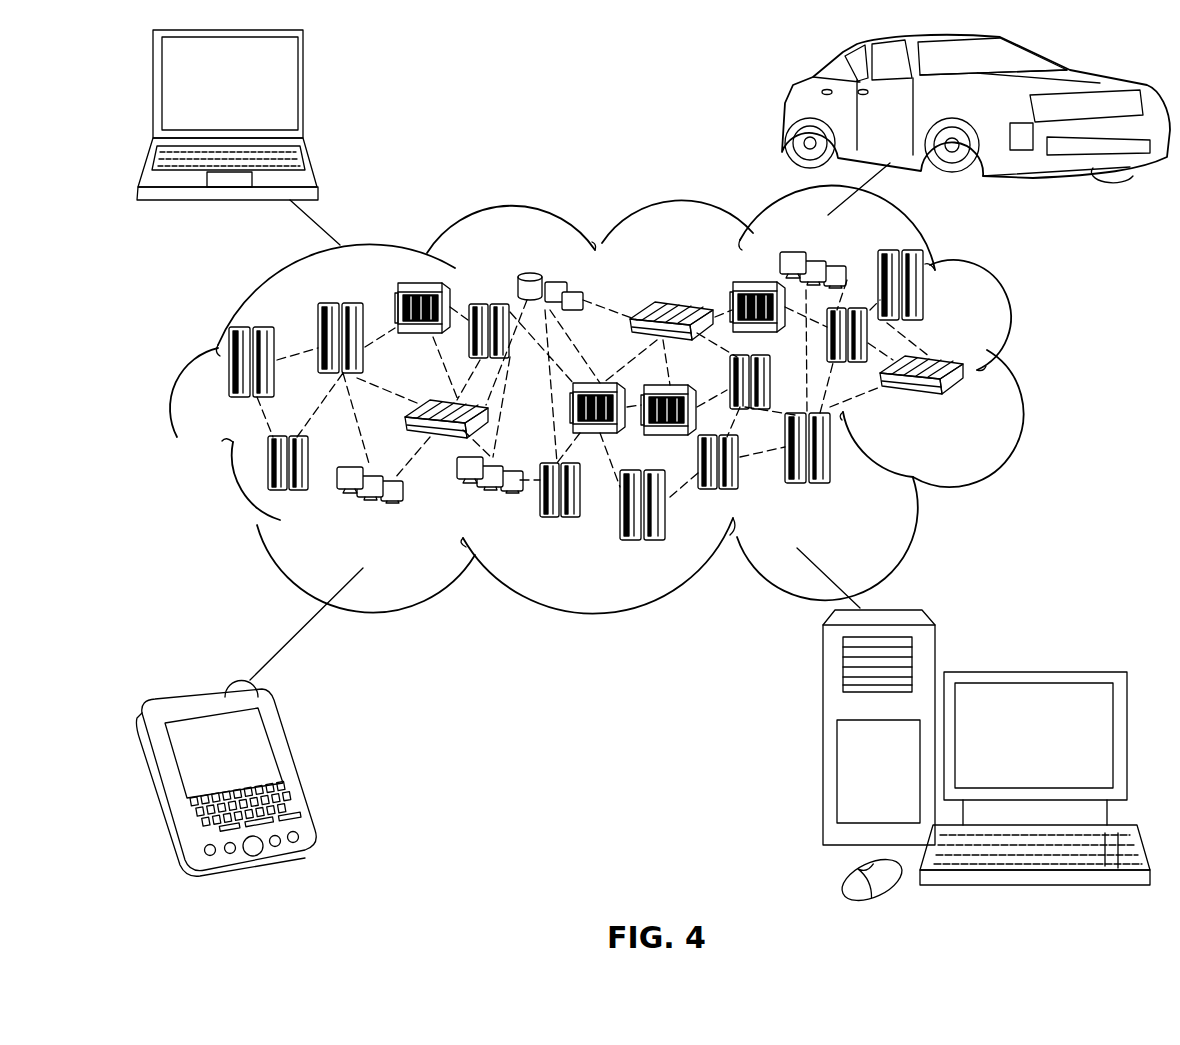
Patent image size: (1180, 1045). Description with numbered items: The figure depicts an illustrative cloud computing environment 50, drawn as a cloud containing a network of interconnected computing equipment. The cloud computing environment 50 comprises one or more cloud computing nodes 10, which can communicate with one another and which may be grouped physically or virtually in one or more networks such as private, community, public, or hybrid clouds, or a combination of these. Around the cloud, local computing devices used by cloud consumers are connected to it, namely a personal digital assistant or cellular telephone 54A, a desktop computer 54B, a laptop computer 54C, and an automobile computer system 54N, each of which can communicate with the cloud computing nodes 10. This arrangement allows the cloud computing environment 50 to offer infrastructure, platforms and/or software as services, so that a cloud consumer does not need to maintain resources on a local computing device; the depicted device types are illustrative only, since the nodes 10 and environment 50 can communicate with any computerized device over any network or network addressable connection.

The cloud computing node 10 is at (970, 404).
The cloud computing environment 50 is at (1030, 375).
The personal digital assistant or cellular telephone 54A is at (293, 763).
The desktop computer 54B is at (1032, 668).
The laptop computer 54C is at (305, 93).
The automobile computer system 54N is at (790, 108).